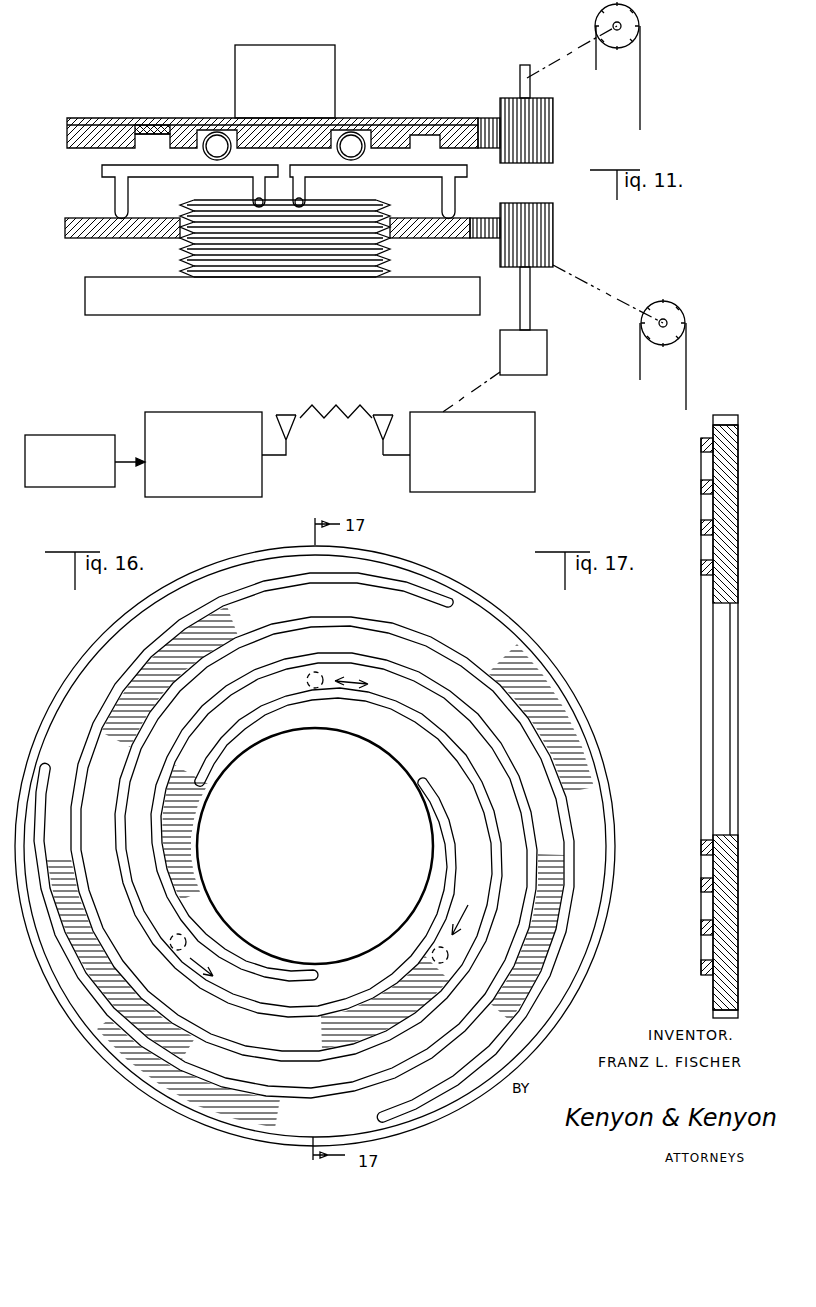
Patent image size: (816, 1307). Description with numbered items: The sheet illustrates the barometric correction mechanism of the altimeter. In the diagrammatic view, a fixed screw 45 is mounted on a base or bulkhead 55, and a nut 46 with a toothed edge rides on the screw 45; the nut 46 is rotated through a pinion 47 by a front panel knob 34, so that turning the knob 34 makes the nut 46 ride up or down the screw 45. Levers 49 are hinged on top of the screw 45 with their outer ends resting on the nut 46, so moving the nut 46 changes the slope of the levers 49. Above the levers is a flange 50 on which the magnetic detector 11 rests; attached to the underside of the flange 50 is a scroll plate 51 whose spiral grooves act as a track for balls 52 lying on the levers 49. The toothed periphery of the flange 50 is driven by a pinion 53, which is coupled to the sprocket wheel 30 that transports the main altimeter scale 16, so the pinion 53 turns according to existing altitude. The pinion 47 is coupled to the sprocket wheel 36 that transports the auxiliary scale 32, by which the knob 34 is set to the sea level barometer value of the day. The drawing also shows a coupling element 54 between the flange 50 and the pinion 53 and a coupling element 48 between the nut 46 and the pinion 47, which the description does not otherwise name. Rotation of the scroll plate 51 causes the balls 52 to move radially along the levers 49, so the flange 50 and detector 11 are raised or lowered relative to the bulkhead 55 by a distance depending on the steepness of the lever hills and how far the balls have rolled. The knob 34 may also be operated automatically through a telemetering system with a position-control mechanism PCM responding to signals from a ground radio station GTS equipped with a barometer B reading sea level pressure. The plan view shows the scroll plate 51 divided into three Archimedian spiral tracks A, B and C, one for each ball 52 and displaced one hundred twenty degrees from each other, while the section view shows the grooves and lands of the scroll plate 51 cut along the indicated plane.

In FIG. 11, the magnetic detector 11 is at (278, 107).
In FIG. 11, the main altimeter scale 16 is at (643, 59).
In FIG. 11, the sprocket wheel 30 is at (640, 17).
In FIG. 11, the auxiliary scale 32 is at (688, 354).
In FIG. 11, the front panel knob 34 is at (547, 345).
In FIG. 11, the sprocket wheel 36 is at (684, 313).
In FIG. 11, the fixed screw 45 is at (392, 256).
In FIG. 11, the nut 46 is at (140, 230).
In FIG. 11, the pinion 47 is at (553, 239).
In FIG. 11, the shaft 48 is at (482, 217).
In FIG. 11, the levers 49 is at (182, 172).
In FIG. 11, the flange 50 is at (112, 120).
In FIG. 11, the scroll plate 51 is at (143, 126).
In FIG. 17, the scroll plate 51 is at (712, 431).
In FIG. 11, the balls 52 is at (218, 134).
In FIG. 16, the balls 52 is at (186, 935).
In FIG. 11, the pinion 53 is at (553, 119).
In FIG. 11, the shaft 54 is at (481, 120).
In FIG. 11, the bulkhead 55 is at (401, 305).
In FIG. 16, the spiral track A is at (220, 734).
In FIG. 11, the spiral track B is at (72, 490).
In FIG. 16, the spiral track B is at (461, 805).
In FIG. 16, the spiral track C is at (243, 992).
In FIG. 11, the ground radio station GTS is at (210, 497).
In FIG. 11, the position-control mechanism PCM is at (468, 490).